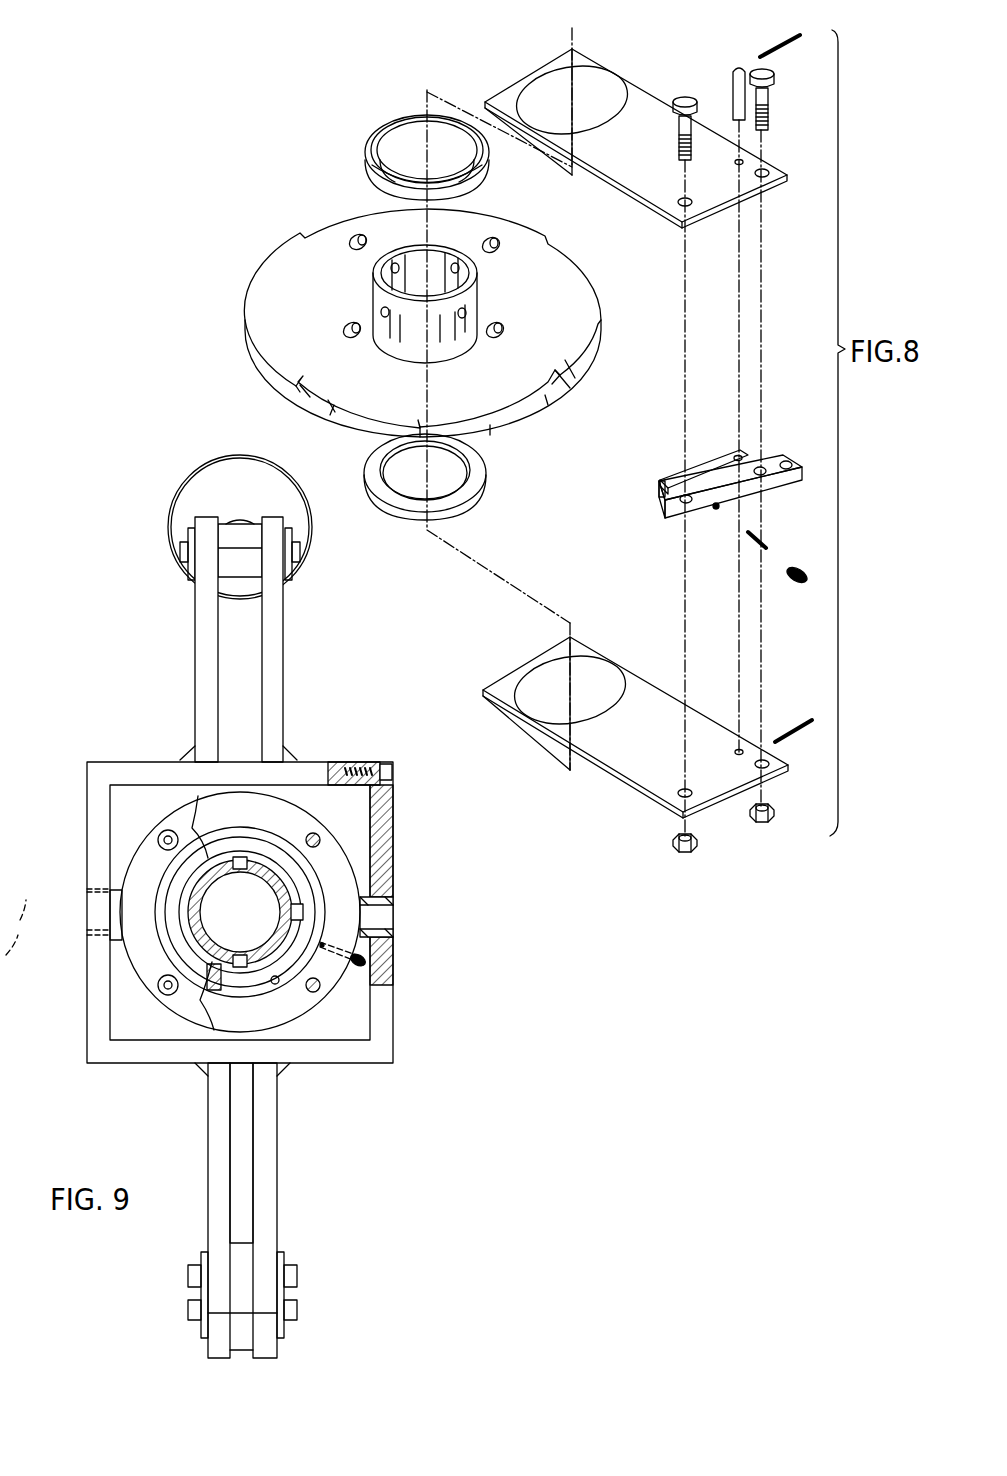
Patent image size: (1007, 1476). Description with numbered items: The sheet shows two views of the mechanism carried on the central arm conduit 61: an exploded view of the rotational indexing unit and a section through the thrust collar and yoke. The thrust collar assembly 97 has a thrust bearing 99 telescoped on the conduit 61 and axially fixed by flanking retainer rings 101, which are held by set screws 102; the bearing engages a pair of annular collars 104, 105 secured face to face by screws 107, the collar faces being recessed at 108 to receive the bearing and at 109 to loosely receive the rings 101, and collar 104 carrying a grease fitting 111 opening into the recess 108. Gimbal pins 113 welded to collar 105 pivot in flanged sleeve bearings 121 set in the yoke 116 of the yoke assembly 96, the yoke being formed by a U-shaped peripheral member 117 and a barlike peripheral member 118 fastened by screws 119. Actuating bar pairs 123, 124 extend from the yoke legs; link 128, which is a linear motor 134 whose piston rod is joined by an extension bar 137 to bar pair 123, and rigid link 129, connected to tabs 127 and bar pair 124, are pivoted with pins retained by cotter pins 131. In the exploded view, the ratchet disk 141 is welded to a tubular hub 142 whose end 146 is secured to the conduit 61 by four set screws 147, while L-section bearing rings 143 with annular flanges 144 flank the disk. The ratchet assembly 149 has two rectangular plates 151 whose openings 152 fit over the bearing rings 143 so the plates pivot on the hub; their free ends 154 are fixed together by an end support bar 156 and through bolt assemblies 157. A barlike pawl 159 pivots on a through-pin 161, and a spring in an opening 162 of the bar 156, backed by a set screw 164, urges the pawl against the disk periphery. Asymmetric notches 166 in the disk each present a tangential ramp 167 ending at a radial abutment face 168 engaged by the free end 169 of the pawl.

In FIG. 9, the central arm conduit 61 is at (190, 920).
In FIG. 9, the yoke assembly 96 is at (163, 758).
In FIG. 9, the thrust collar assembly 97 is at (132, 842).
In FIG. 9, the thrust bearing 99 is at (215, 838).
In FIG. 9, the retainer rings 101 is at (216, 858).
In FIG. 9, the set screws 102 is at (302, 910).
In FIG. 9, the collar 104 is at (330, 853).
In FIG. 9, the collar 105 is at (148, 957).
In FIG. 9, the screws 107 is at (318, 836).
In FIG. 9, the thrust bearing recess 108 is at (275, 982).
In FIG. 9, the recess 109 is at (218, 985).
In FIG. 9, the grease fitting 111 is at (352, 995).
In FIG. 9, the gimbal pins 113 is at (95, 905).
In FIG. 9, the yoke 116 is at (82, 1042).
In FIG. 9, the U-shaped peripheral member 117 is at (142, 1068).
In FIG. 9, the barlike peripheral member 118 is at (388, 1018).
In FIG. 9, the screws 119 is at (388, 768).
In FIG. 9, the sleeve bearings 121 is at (100, 930).
In FIG. 9, the actuating bar pair 123 is at (268, 635).
In FIG. 9, the actuating bar pair 124 is at (220, 1150).
In FIG. 9, the tabs 127 is at (265, 1340).
In FIG. 9, the link 128 is at (158, 505).
In FIG. 9, the link 129 is at (245, 1262).
In FIG. 9, the cotter pins 131 is at (295, 1280).
In FIG. 9, the linear motor 134 is at (195, 490).
In FIG. 9, the extension bar 137 is at (228, 548).
In FIG. 8, the ratchet disk 141 is at (572, 275).
In FIG. 8, the tubular hub 142 is at (436, 322).
In FIG. 8, the bearing rings 143 is at (380, 160).
In FIG. 8, the annular flanges 144 is at (390, 180).
In FIG. 8, the hub end 146 is at (410, 318).
In FIG. 8, the set screws 147 is at (497, 250).
In FIG. 8, the ratchet assembly 149 is at (640, 62).
In FIG. 8, the plates 151 is at (658, 115).
In FIG. 8, the openings 152 is at (556, 72).
In FIG. 8, the free ends 154 is at (755, 190).
In FIG. 8, the end support bar 156 is at (762, 490).
In FIG. 8, the through bolt assemblies 157 is at (770, 97).
In FIG. 8, the pawl 159 is at (712, 462).
In FIG. 8, the through-pin 161 is at (726, 80).
In FIG. 8, the opening 162 is at (716, 512).
In FIG. 8, the set screw 164 is at (795, 585).
In FIG. 8, the notches 166 is at (572, 382).
In FIG. 8, the ramp 167 is at (568, 368).
In FIG. 8, the abutment face 168 is at (305, 395).
In FIG. 8, the free end of pawl 169 is at (632, 491).